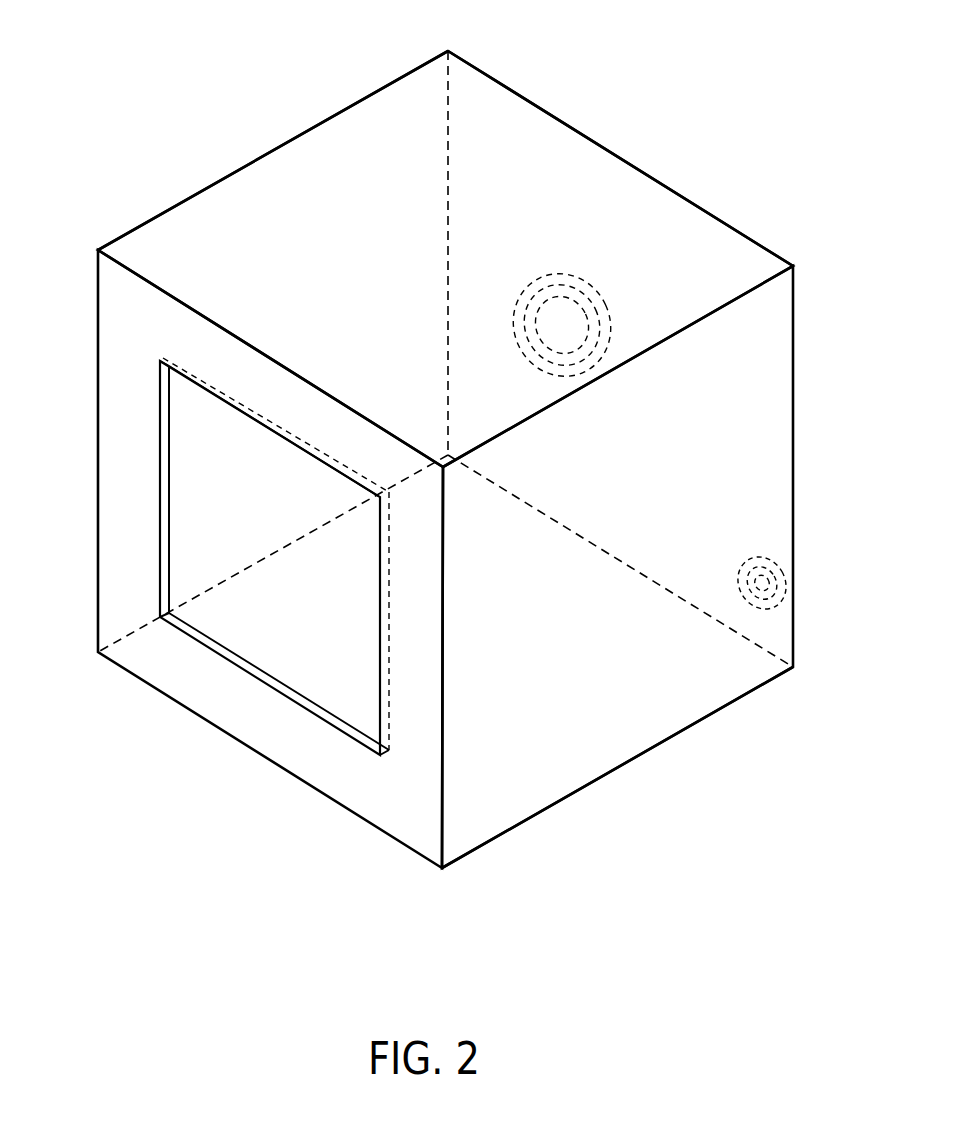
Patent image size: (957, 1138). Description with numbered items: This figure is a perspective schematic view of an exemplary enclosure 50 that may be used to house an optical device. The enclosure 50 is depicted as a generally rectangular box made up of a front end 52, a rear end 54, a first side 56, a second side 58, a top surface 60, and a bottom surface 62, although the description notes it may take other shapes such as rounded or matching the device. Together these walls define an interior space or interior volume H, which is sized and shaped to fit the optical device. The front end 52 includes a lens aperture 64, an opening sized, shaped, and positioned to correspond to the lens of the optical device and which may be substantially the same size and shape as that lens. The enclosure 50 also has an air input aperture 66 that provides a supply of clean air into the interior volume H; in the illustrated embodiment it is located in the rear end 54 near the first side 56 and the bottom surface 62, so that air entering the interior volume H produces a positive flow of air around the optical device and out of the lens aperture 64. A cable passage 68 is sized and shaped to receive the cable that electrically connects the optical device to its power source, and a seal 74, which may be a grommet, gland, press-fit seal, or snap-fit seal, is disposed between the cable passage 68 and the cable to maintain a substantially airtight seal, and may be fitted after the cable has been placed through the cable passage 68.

The enclosure 50 is at (103, 78).
The front end 52 is at (408, 805).
The rear end 54 is at (566, 103).
The first side 56 is at (497, 793).
The second side 58 is at (281, 130).
The top surface 60 is at (173, 250).
The bottom surface 62 is at (656, 776).
The lens aperture 64 is at (228, 630).
The air input aperture 66 is at (812, 574).
The cable passage 68 is at (551, 337).
The seal 74 is at (555, 300).
The interior volume H is at (212, 488).